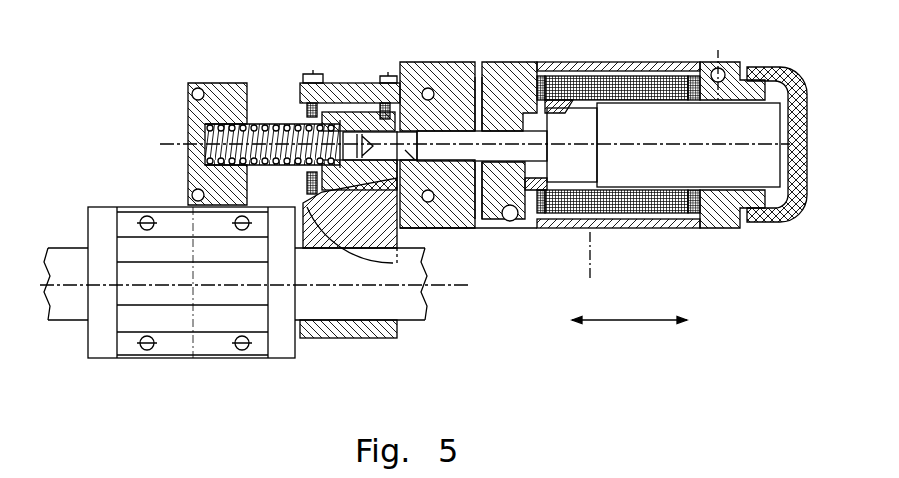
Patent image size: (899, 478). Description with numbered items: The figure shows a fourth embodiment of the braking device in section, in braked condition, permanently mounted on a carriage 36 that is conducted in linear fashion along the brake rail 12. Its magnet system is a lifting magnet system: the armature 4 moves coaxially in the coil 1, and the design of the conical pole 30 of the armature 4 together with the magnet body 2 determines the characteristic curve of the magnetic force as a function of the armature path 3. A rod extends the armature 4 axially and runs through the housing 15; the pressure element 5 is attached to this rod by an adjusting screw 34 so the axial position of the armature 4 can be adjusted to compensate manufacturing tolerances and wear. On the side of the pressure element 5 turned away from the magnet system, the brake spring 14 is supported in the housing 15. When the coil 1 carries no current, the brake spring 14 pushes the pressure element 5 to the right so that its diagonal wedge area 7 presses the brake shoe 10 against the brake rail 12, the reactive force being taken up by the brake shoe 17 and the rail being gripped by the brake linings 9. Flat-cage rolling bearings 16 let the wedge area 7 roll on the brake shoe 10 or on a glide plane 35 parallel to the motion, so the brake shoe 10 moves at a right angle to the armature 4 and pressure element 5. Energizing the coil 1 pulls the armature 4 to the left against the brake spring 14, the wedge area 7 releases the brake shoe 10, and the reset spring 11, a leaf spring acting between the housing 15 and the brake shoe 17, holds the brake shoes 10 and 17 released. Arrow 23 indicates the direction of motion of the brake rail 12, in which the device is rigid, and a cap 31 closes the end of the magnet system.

The coil 1 is at (582, 87).
The magnet body 2 is at (505, 88).
The armature path 3 is at (543, 93).
The armature 4 is at (687, 117).
The pressure element 5 is at (355, 110).
The diagonal wedge area 7 is at (370, 249).
The brake linings 9 is at (322, 250).
The brake shoe 10 is at (392, 243).
The reset spring 11 is at (303, 72).
The brake rail 12 is at (418, 263).
The brake spring 14 is at (267, 125).
The housing 15 is at (226, 96).
The flat-cage rolling bearings 16 is at (398, 66).
The brake shoe 17 is at (355, 331).
The arrow 23 is at (651, 326).
The pole 30 is at (552, 203).
The protective cap 31 is at (777, 222).
The adjusting screw 34 is at (462, 230).
The glide plane 35 is at (335, 102).
The carriage 36 is at (205, 323).